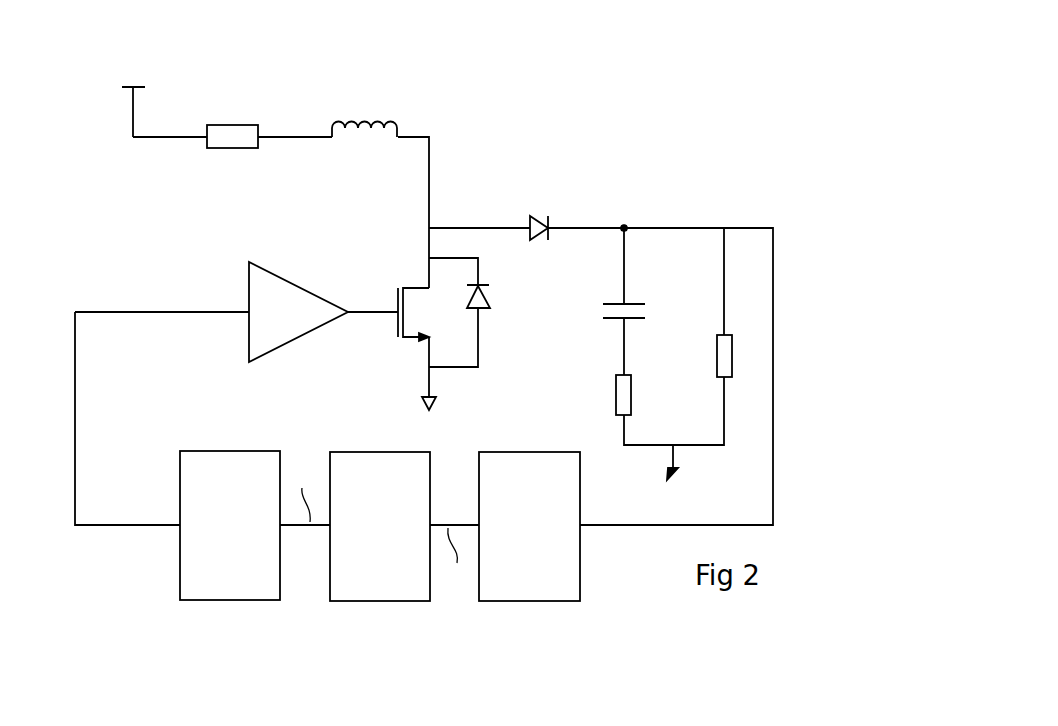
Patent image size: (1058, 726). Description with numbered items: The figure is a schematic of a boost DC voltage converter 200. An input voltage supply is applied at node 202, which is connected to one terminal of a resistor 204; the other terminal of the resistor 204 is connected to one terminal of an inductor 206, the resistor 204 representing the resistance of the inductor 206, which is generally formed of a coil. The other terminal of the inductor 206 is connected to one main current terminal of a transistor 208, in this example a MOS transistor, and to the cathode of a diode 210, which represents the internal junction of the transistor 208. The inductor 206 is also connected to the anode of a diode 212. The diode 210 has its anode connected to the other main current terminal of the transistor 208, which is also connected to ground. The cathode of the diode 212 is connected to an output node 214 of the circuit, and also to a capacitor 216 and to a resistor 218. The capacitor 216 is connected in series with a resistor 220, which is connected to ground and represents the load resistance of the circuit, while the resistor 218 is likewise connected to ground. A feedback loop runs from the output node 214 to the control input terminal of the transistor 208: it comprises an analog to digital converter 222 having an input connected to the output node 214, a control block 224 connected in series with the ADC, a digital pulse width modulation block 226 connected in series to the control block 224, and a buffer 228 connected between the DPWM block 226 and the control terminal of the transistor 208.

The boost DC voltage converter 200 is at (107, 50).
The input voltage supply node 202 is at (133, 113).
The resistor 204 is at (243, 150).
The inductor 206 is at (373, 138).
The transistor 208 is at (415, 283).
The diode 210 is at (486, 300).
The diode 212 is at (542, 217).
The output node 214 is at (625, 226).
The capacitor 216 is at (632, 298).
The resistor 218 is at (727, 335).
The resistor 220 is at (615, 388).
The analog to digital converter 222 is at (537, 458).
The control block 224 is at (375, 457).
The digital pulse width modulation block 226 is at (220, 455).
The buffer 228 is at (277, 335).